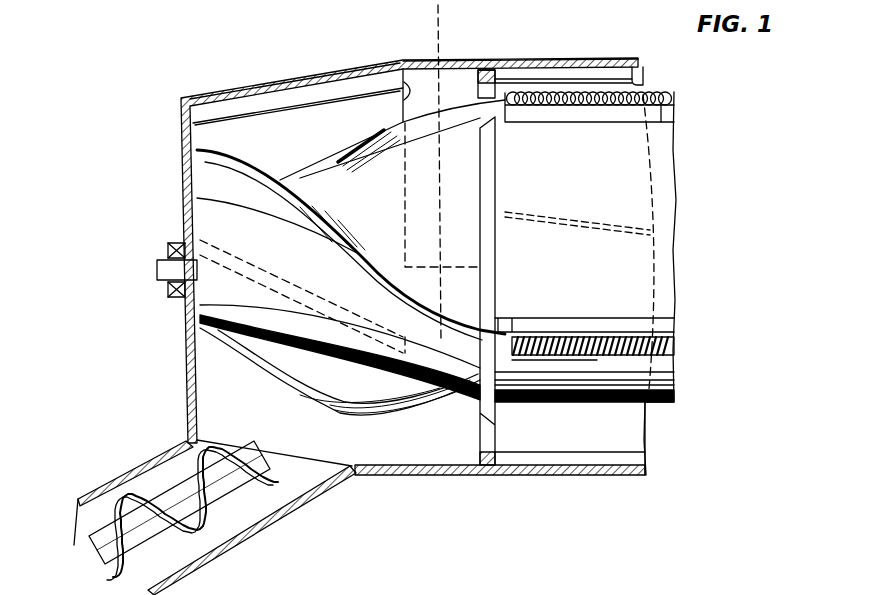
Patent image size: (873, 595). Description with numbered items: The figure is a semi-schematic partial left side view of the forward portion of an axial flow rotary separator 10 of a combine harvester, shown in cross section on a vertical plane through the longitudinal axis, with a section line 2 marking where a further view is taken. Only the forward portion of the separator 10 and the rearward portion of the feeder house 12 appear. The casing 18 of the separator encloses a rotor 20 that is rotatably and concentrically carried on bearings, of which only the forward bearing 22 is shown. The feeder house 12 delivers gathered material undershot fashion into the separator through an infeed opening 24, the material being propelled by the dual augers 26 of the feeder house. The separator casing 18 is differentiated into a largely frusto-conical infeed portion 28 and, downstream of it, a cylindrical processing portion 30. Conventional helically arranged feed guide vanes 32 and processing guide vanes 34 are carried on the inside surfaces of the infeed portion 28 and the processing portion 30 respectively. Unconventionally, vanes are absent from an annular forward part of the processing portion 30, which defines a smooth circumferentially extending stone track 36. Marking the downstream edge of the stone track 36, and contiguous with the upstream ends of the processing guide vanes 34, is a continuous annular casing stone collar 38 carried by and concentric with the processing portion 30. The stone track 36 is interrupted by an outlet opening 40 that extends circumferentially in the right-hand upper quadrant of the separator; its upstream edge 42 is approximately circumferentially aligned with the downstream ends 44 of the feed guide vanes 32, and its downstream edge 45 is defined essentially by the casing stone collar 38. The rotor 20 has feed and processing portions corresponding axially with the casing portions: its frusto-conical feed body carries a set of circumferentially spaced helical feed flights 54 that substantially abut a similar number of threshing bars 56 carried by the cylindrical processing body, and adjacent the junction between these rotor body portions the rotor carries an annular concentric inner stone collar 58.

The separator 10 is at (153, 145).
The feeder house 12 is at (143, 455).
The casing 18 is at (313, 47).
The rotor 20 is at (682, 402).
The forward bearing 22 is at (186, 298).
The infeed opening 24 is at (223, 447).
The dual augers 26 is at (182, 567).
The infeed portion 28 is at (229, 96).
The processing portion 30 is at (515, 238).
The feed guide vanes 32 is at (258, 114).
The processing guide vanes 34 is at (643, 90).
The stone track 36 is at (461, 70).
The casing stone collar 38 is at (497, 70).
The outlet opening 40 is at (460, 194).
The upstream edge 42 is at (390, 152).
The downstream ends 44 is at (403, 108).
The downstream edge 45 is at (474, 91).
The helical feed flights 54 is at (352, 137).
The threshing bars 56 is at (661, 113).
The inner stone collar 58 is at (487, 245).
The section line 2 is at (455, 15).